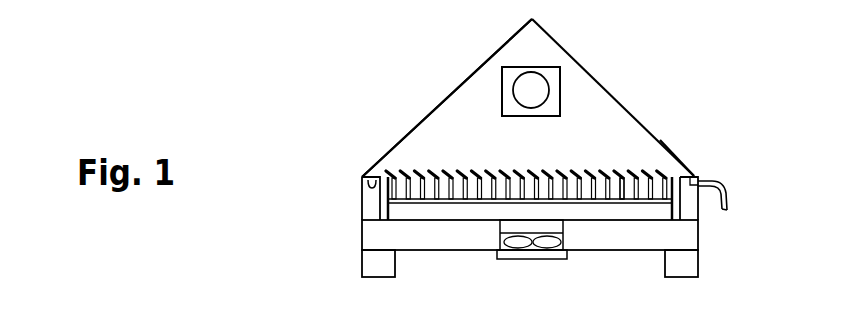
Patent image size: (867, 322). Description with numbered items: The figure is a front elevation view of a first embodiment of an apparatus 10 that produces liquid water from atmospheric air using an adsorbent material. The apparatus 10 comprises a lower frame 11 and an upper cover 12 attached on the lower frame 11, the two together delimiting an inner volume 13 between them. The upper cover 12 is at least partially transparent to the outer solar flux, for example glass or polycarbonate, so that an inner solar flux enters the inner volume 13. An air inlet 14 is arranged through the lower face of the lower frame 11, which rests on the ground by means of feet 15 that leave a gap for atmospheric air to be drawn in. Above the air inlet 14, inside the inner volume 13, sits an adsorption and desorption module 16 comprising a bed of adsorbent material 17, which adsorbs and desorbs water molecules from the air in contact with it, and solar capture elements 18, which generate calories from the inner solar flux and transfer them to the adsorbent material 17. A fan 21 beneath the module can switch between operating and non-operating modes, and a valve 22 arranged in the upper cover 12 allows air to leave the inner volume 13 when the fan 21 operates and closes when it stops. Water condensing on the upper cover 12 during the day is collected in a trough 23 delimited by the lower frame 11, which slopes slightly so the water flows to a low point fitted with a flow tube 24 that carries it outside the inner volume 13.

The apparatus 10 is at (654, 88).
The lower frame 11 is at (690, 238).
The upper cover 12 is at (444, 95).
The inner volume 13 is at (403, 148).
The air inlet 14 is at (508, 265).
The feet 15 is at (687, 264).
The adsorption and desorption module 16 is at (671, 168).
The bed of adsorbent material 17 is at (627, 193).
The solar capture elements 18 is at (527, 173).
The fan 21 is at (545, 243).
The valve 22 is at (563, 73).
The trough 23 is at (371, 188).
The flow tube 24 is at (727, 195).